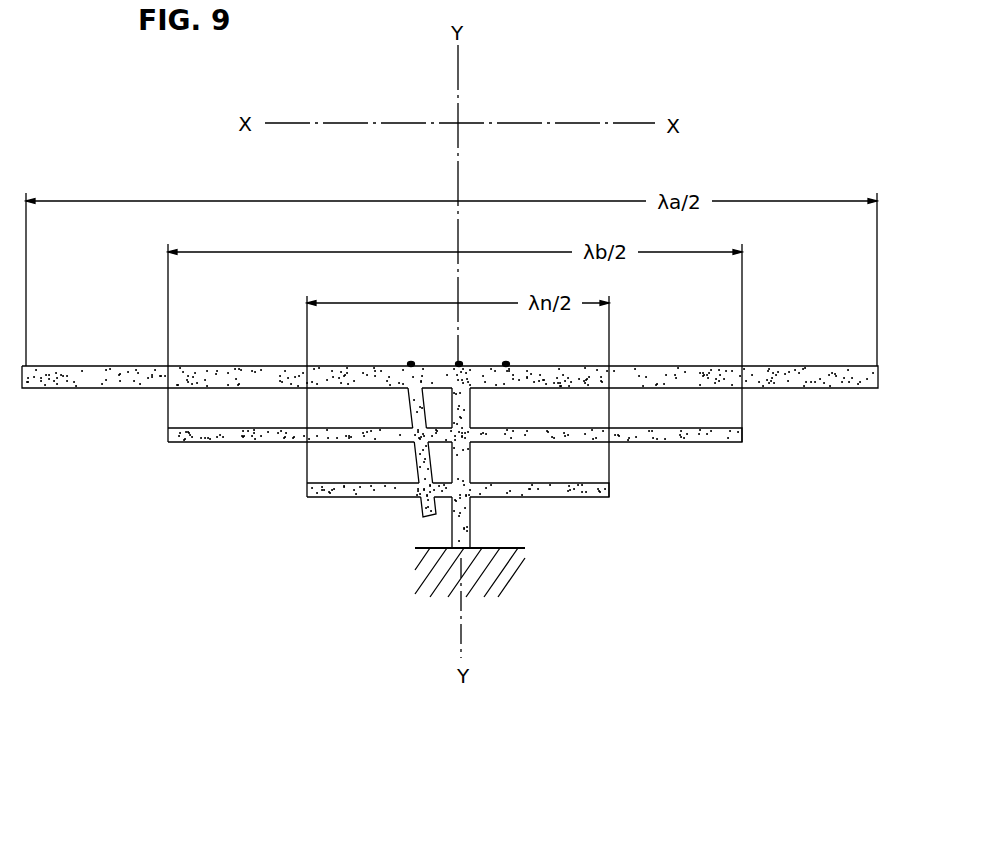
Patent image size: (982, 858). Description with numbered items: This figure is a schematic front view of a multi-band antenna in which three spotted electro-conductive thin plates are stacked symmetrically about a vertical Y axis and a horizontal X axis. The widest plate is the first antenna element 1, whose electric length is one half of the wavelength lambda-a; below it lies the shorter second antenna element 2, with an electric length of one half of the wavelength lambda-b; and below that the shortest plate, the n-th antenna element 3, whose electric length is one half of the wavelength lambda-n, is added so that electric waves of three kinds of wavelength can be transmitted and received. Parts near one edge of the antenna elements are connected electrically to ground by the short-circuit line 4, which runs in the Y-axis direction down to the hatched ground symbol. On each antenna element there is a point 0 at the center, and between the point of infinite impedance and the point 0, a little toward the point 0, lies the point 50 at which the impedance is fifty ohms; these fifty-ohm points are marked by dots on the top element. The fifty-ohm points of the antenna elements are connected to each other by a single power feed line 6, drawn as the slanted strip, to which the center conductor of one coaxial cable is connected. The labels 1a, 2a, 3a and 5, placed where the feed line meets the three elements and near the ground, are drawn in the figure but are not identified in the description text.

The first antenna element 1 is at (847, 390).
The second antenna element 2 is at (743, 437).
The n-th antenna element 3 is at (612, 490).
The short-circuit line 4 is at (425, 413).
The ground plate 5 is at (433, 547).
The power feed line 6 is at (470, 412).
The connection point of first element 1a is at (407, 390).
The connection point of second element 2a is at (410, 443).
The connection point of third element 3a is at (417, 498).
The point of impedance being 50 Ω 50 is at (409, 362).
The point 0 is at (457, 362).